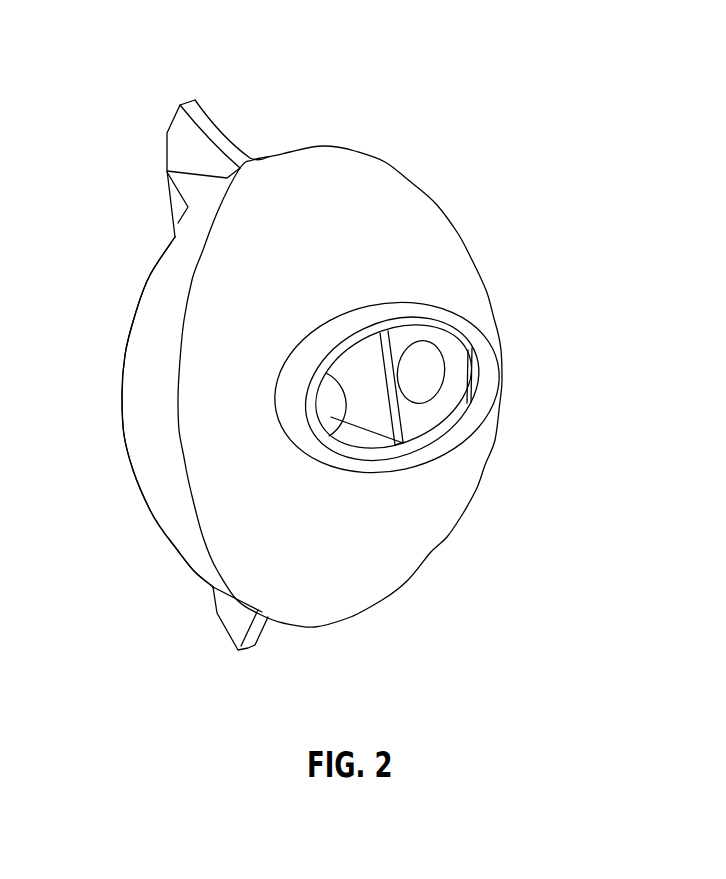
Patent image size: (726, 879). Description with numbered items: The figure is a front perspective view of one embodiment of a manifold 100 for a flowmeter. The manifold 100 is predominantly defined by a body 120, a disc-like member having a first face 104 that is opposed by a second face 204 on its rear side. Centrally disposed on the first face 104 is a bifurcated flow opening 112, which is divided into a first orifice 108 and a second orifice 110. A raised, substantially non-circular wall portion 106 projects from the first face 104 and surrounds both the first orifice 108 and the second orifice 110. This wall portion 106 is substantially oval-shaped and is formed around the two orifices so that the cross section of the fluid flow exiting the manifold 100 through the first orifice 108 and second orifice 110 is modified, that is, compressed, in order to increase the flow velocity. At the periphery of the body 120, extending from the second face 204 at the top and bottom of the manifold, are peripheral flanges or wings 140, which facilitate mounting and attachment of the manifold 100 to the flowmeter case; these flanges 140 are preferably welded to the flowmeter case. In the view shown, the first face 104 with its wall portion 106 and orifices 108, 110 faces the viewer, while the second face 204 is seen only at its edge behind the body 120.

The manifold 100 is at (538, 112).
The first face 104 is at (467, 272).
The wall portion 106 is at (455, 433).
The first orifice 108 is at (393, 433).
The second orifice 110 is at (432, 374).
The bifurcated flow opening 112 is at (370, 440).
The body 120 is at (182, 518).
The peripheral flanges or wings 140 is at (218, 125).
The second face 204 is at (122, 375).